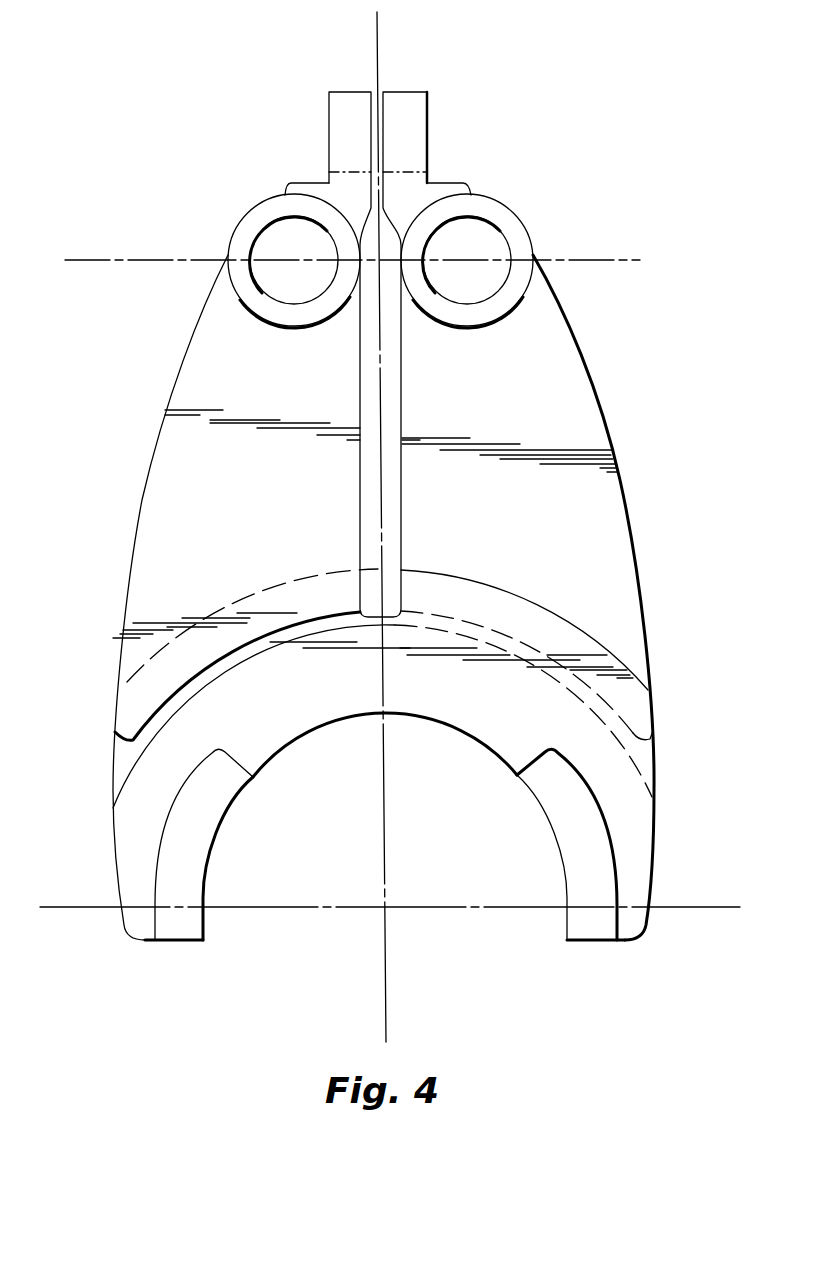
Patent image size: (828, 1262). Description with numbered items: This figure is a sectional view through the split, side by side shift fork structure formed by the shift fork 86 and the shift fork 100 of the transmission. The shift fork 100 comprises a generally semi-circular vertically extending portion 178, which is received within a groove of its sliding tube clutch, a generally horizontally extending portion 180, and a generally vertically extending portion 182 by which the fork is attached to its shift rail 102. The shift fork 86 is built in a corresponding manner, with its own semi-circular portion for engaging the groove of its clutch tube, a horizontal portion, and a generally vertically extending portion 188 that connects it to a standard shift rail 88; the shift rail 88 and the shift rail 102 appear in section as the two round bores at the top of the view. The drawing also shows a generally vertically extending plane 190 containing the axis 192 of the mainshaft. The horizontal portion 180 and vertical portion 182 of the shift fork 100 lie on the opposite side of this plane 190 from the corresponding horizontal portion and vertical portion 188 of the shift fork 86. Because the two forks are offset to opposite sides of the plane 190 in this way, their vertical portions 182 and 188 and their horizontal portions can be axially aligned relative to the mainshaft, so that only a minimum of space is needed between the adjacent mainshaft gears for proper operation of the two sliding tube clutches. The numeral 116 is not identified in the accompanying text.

The shift fork 86 is at (155, 440).
The shift rail 88 is at (268, 249).
The shift fork 100 is at (382, 516).
The shift rail 102 is at (487, 241).
The arcuate rib 116 is at (143, 692).
The semi-circular vertically extending portion 178 is at (456, 694).
The horizontally extending portion 180 is at (620, 690).
The vertically extending portion 182 is at (608, 525).
The vertically extending portion 188 is at (163, 510).
The vertically extending plane 190 is at (378, 62).
The axis 192 is at (388, 912).